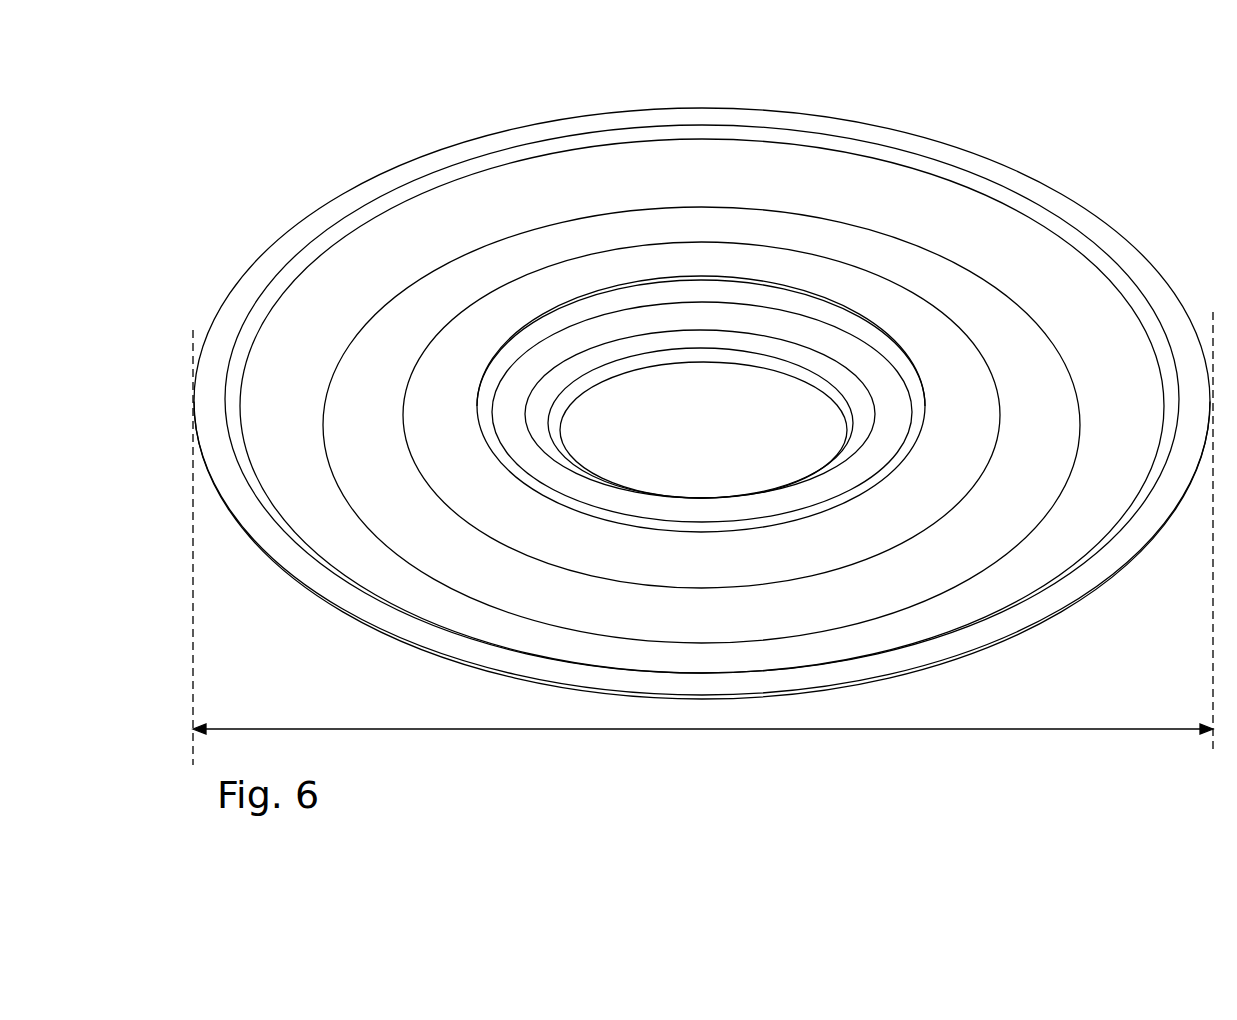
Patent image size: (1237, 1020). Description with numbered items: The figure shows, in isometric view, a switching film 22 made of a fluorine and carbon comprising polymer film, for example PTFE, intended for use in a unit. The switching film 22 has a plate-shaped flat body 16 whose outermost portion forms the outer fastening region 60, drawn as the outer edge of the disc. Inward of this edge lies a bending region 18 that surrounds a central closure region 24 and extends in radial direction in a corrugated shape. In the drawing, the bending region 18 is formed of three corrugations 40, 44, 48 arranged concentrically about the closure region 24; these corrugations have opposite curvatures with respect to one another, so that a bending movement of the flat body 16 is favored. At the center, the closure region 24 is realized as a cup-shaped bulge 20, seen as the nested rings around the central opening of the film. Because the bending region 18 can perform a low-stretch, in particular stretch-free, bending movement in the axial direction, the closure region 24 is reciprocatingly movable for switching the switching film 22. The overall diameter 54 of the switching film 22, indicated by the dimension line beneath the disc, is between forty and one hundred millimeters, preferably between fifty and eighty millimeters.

The plate-shaped flat body 16 is at (527, 182).
The bending region 18 is at (387, 248).
The cup-shaped bulge 20 is at (567, 417).
The switching film 22 is at (701, 375).
The central closure region 24 is at (680, 430).
The corrugation 40 is at (1122, 355).
The corrugation 44 is at (877, 245).
The corrugation 48 is at (938, 340).
The diameter 54 is at (1088, 728).
The outer fastening region 60 is at (253, 270).